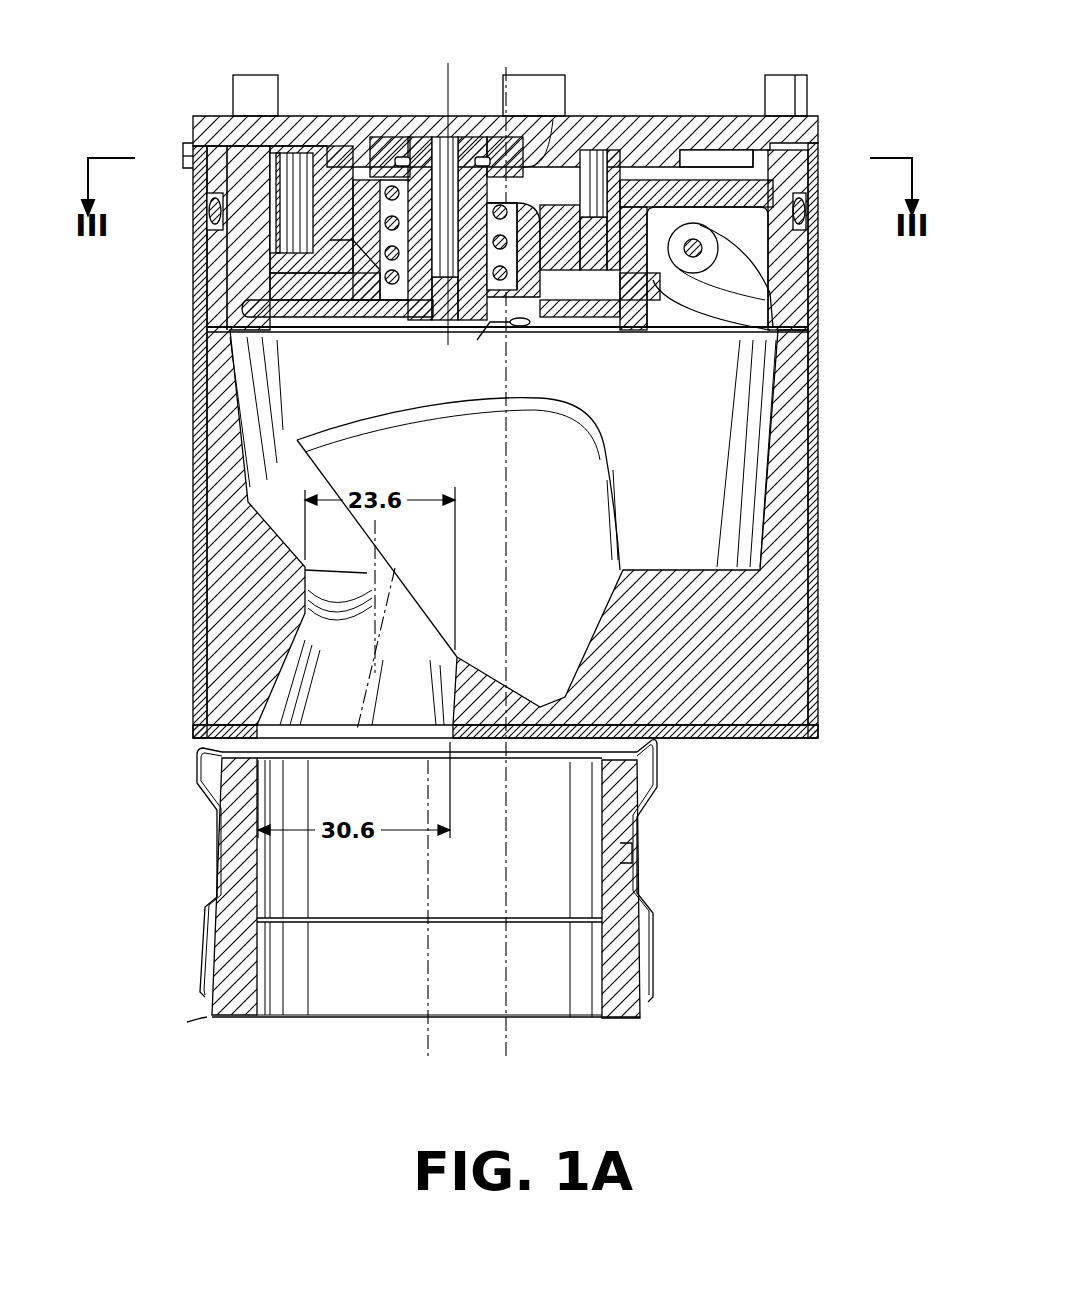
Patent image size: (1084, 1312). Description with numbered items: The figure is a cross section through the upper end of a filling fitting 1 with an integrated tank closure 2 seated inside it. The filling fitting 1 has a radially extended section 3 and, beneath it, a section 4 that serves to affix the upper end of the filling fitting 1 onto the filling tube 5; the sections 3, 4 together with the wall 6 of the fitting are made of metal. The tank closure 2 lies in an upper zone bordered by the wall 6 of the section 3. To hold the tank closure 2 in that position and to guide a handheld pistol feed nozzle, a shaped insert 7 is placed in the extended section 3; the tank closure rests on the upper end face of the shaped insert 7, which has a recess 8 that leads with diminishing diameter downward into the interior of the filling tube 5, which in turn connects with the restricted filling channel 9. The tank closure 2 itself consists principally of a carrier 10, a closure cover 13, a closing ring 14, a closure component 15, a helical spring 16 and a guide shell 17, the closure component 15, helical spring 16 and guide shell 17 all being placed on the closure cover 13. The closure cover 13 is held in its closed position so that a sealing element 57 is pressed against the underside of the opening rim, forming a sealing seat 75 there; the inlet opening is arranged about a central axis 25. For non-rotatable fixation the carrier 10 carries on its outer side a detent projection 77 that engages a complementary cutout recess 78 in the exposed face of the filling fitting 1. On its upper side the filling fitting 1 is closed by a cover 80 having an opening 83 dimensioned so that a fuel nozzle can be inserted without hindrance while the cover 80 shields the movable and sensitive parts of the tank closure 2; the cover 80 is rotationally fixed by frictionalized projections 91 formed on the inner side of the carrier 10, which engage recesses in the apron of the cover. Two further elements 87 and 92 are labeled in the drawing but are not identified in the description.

The filling fitting 1 is at (766, 806).
The tank closure 2 is at (805, 262).
The radially extended section 3 is at (826, 153).
The section 4 is at (655, 920).
The filling tube 5 is at (208, 1018).
The wall 6 is at (820, 506).
The shaped insert 7 is at (760, 647).
The recess 8 is at (238, 380).
The restricted filling channel 9 is at (268, 693).
The carrier 10 is at (222, 253).
The closure cover 13 is at (638, 326).
The closing ring 14 is at (584, 196).
The closure component 15 is at (428, 285).
The helical spring 16 is at (370, 272).
The guide shell 17 is at (516, 128).
The central axis 25 is at (450, 92).
The sealing element 57 is at (207, 332).
The sealing seat 75 is at (245, 306).
The detent projection 77 is at (190, 152).
The cutout recess 78 is at (188, 162).
The cover 80 is at (688, 152).
The opening 83 is at (368, 124).
The terminal 87 is at (768, 114).
The frictionalized projections 91 is at (680, 165).
The boss 92 is at (426, 140).